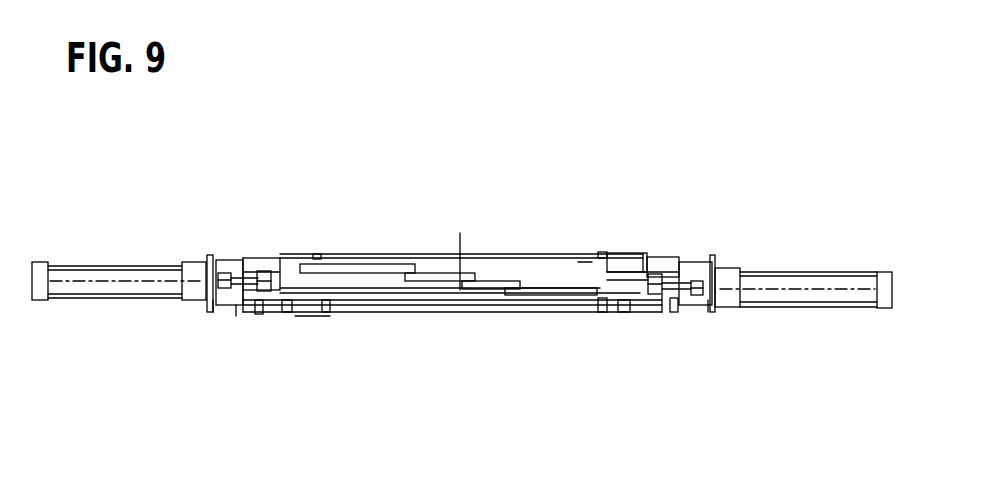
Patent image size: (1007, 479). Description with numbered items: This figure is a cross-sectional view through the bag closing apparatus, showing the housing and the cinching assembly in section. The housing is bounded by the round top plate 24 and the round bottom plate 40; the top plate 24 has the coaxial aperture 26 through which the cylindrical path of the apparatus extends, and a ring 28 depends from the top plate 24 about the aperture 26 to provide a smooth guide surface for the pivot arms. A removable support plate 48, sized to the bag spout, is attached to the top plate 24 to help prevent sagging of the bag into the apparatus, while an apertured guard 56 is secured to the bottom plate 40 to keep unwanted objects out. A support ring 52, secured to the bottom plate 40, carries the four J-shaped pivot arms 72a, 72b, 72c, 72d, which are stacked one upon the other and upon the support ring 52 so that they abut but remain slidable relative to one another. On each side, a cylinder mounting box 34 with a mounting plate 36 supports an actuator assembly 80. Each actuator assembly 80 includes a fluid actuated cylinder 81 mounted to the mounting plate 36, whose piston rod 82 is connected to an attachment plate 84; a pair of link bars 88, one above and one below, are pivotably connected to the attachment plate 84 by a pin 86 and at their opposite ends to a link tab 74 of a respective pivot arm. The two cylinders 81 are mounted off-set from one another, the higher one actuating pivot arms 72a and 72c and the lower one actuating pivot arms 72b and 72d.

The top plate 24 is at (246, 258).
The aperture 26 is at (493, 240).
The ring 28 is at (575, 262).
The cylinder mounting box 34 is at (230, 258).
The mounting plate 36 is at (209, 256).
The bottom plate 40 is at (238, 312).
The support plate 48 is at (622, 254).
The support ring 52 is at (380, 313).
The guard 56 is at (310, 316).
The pivot arm 72a is at (380, 263).
The pivot arm 72b is at (438, 263).
The pivot arm 72c is at (470, 290).
The pivot arm 72d is at (538, 296).
The link tab 74 is at (318, 255).
The actuator assembly 80 is at (146, 183).
The fluid actuated cylinder 81 is at (91, 290).
The piston rod 82 is at (205, 308).
The attachment plate 84 is at (225, 306).
The pin 86 is at (259, 312).
The link bar 88 is at (283, 258).